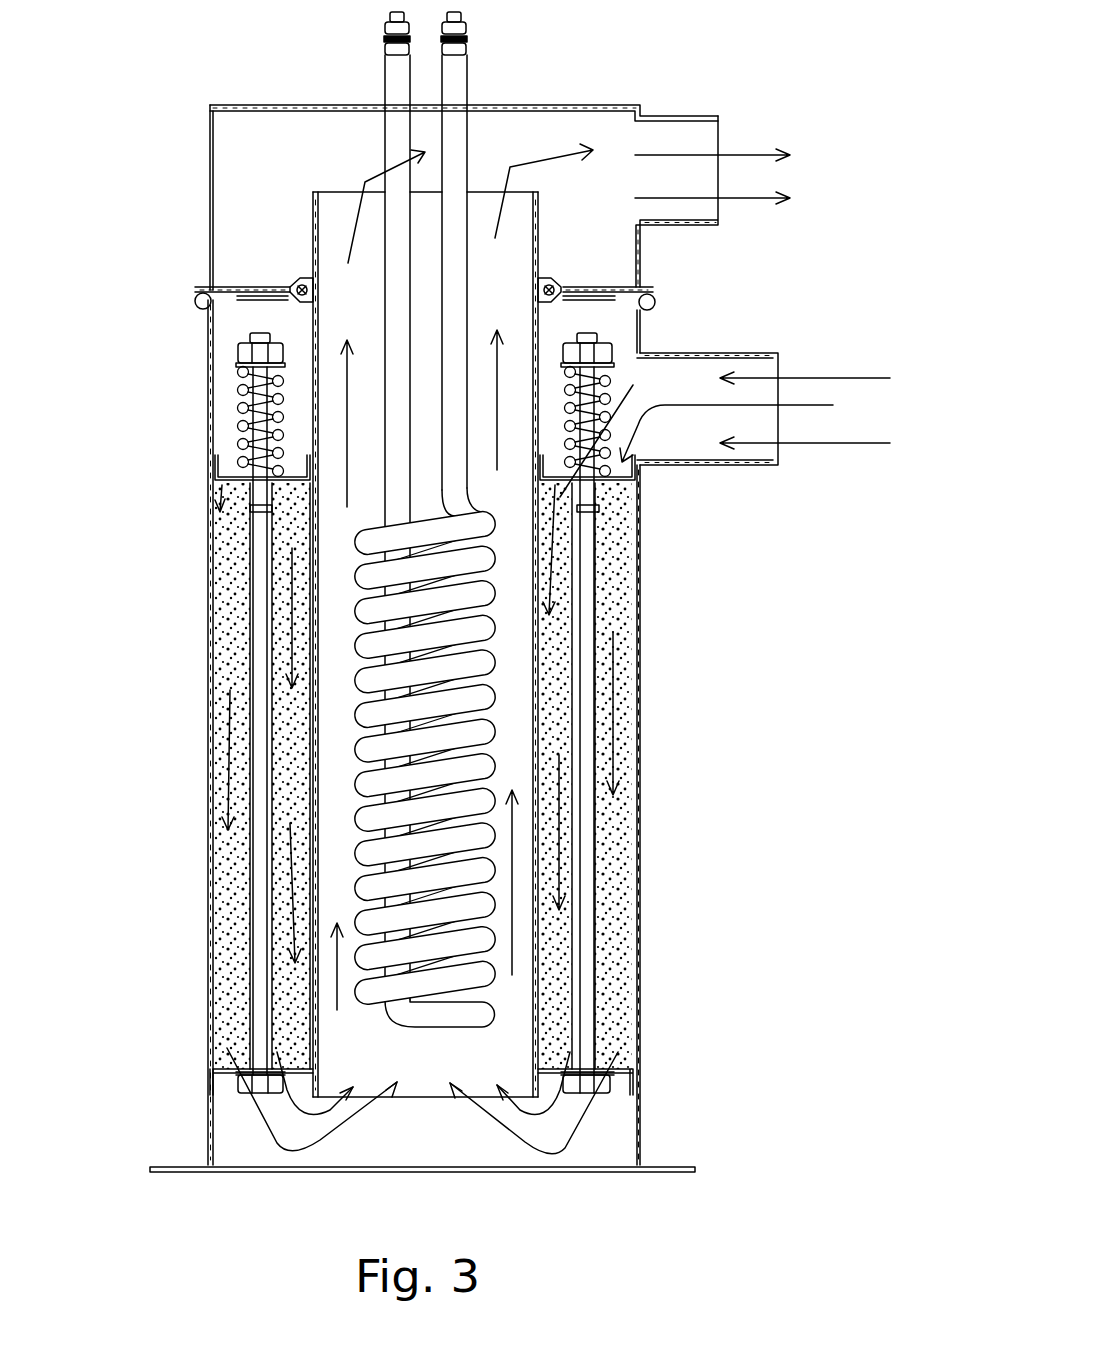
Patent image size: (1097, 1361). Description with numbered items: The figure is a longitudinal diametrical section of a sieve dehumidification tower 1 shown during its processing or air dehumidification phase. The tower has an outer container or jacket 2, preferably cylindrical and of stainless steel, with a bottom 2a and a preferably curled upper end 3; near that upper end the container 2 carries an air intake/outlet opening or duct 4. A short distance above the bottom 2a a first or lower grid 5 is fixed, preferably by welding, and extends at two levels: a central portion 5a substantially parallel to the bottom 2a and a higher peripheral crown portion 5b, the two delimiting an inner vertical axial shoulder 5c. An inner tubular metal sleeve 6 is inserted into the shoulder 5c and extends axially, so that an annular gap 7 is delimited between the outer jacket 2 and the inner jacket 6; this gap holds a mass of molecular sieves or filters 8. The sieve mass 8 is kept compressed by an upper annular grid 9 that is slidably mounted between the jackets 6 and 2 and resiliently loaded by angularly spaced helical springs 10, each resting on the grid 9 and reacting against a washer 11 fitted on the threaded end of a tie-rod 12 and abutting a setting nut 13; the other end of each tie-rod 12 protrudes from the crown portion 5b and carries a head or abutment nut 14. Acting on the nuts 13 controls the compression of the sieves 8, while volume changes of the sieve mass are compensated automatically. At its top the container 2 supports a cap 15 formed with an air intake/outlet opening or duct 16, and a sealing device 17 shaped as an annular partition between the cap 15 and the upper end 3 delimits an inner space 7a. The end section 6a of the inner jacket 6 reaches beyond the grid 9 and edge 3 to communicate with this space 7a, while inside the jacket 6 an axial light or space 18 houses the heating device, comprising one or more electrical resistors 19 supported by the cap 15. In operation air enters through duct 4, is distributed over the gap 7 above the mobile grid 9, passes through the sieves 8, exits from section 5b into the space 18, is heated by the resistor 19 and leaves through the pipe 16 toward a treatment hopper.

The dehumidification tower 1 is at (165, 174).
The outer container or jacket 2 is at (205, 933).
The bottom 2a is at (587, 1170).
The upper end 3 is at (658, 305).
The air intake/outlet opening or duct 4 is at (707, 367).
The first or lower grid 5 is at (407, 1114).
The central portion 5a is at (428, 1100).
The peripheral crown portion 5b is at (225, 1065).
The inner vertical axial shoulder 5c is at (278, 1143).
The inner tubular metal sleeve 6 is at (325, 820).
The end section 6a is at (313, 225).
The annular gap 7 is at (622, 863).
The inner space 7a is at (277, 143).
The mass of molecular sieves or filters 8 is at (618, 613).
The upper annular grid 9 is at (634, 508).
The helical springs 10 is at (243, 420).
The washer 11 is at (243, 385).
The tie-rod 12 is at (257, 595).
The setting nut 13 is at (240, 355).
The head or abutment nut 14 is at (237, 1085).
The cap 15 is at (521, 102).
The air intake/outlet opening or duct 16 is at (683, 128).
The sealing device 17 is at (250, 285).
The axial light or space 18 is at (337, 532).
The electrical resistors 19 is at (353, 713).